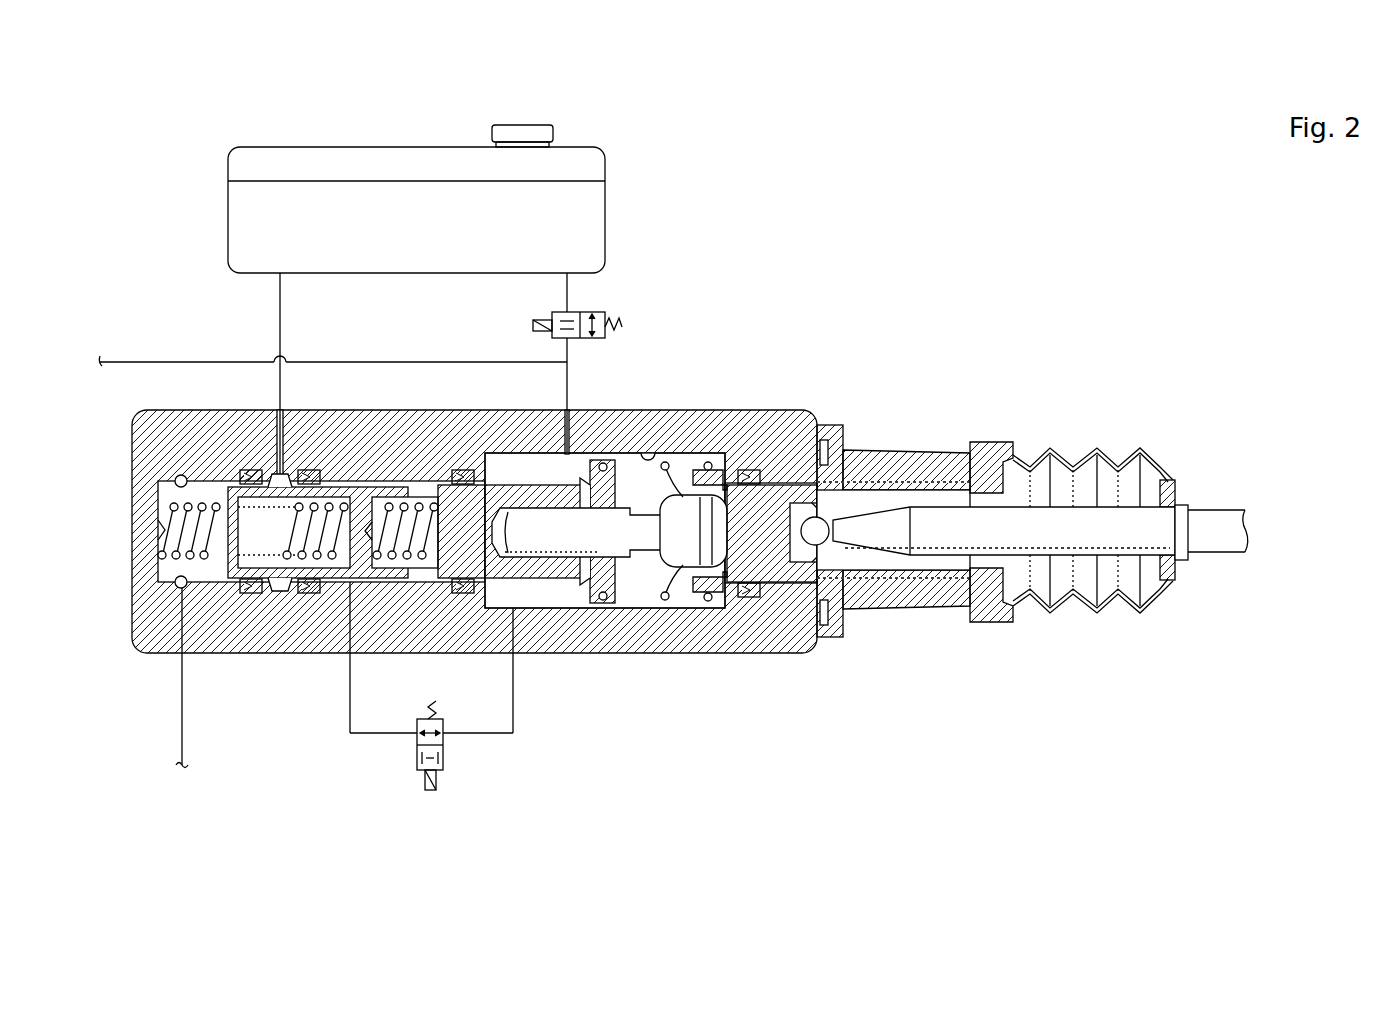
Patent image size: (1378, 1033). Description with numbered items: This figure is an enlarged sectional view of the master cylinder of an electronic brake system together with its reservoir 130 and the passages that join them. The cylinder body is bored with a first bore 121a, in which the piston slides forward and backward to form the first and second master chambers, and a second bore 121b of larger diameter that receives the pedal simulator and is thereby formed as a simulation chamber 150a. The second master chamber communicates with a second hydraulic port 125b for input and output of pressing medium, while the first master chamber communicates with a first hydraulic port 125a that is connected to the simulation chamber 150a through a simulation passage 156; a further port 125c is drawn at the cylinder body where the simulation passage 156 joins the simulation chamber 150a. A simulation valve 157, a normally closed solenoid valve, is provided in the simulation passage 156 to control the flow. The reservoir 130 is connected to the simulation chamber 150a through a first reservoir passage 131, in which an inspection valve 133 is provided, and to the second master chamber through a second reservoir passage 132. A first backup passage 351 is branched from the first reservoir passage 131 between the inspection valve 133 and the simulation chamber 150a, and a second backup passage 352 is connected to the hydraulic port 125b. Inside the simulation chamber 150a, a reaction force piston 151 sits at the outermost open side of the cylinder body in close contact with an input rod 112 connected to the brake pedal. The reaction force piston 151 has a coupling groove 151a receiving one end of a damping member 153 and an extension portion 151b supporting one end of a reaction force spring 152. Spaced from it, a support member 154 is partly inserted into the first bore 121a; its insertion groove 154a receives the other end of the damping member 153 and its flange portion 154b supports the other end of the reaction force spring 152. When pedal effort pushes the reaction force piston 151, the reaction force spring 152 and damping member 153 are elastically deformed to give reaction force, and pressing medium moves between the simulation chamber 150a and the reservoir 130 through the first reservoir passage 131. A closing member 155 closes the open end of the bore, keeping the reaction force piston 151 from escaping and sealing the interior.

The input rod 112 is at (1088, 515).
The first bore 121a is at (418, 478).
The second bore 121b is at (648, 452).
The first hydraulic port 125a is at (345, 583).
The second hydraulic port 125b is at (175, 586).
The second piston 125c is at (510, 625).
The reservoir 130 is at (392, 158).
The first reservoir passage 131 is at (570, 297).
The second reservoir passage 132 is at (277, 322).
The inspection valve 133 is at (598, 338).
The simulation chamber 150a is at (688, 465).
The reaction force piston 151 is at (770, 578).
The coupling groove 151a is at (700, 592).
The extension portion 151b is at (710, 600).
The reaction force spring 152 is at (665, 600).
The damping member 153 is at (635, 592).
The support member 154 is at (535, 483).
The insertion groove 154a is at (565, 592).
The flange portion 154b is at (600, 598).
The closing member 155 is at (795, 470).
The simulation passage 156 is at (376, 736).
The simulation valve 157 is at (445, 768).
The first backup passage 351 is at (348, 362).
The second backup passage 352 is at (182, 712).